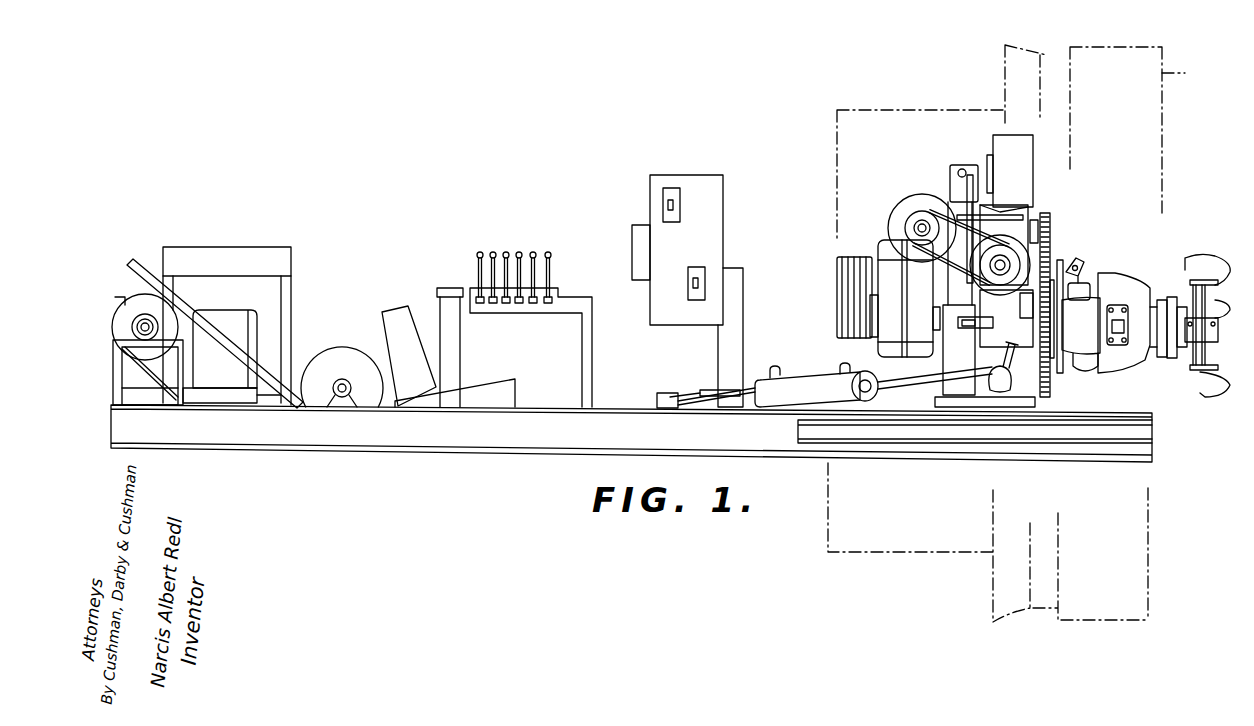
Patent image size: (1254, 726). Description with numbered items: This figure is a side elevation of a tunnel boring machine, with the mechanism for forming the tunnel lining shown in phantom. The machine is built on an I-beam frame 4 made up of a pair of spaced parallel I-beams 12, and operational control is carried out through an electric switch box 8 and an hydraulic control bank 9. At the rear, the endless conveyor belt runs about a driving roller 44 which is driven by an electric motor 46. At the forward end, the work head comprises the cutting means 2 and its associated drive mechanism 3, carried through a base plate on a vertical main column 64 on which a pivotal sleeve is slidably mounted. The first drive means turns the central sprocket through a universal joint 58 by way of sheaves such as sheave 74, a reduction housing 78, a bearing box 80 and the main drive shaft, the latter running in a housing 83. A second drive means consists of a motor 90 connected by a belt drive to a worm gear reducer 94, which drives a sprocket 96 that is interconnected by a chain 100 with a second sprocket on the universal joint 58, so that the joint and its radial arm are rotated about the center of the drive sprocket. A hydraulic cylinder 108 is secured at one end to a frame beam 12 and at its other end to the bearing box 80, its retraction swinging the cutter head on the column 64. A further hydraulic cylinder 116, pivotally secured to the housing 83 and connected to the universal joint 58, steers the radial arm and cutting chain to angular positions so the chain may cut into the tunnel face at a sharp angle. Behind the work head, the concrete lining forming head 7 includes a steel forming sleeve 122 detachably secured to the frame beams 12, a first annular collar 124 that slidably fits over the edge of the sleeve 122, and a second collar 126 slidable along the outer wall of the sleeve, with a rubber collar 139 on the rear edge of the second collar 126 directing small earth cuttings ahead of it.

The cutting means 2 is at (1213, 433).
The drive mechanism 3 is at (909, 159).
The I-beam frame 4 is at (448, 446).
The concrete lining forming head 7 is at (980, 518).
The electric switch box 8 is at (688, 175).
The hydraulic control bank 9 is at (577, 296).
The I-beams 12 is at (637, 412).
The driving roller 44 is at (123, 301).
The electric motor 46 is at (266, 311).
The universal joint 58 is at (1125, 369).
The vertical main column 64 is at (1017, 143).
The sheave 74 is at (837, 282).
The reduction housing 78 is at (890, 344).
The bearing box 80 is at (1059, 380).
The housing 83 is at (1066, 258).
The motor 90 is at (907, 204).
The worm gear reducer 94 is at (1000, 210).
The sprocket 96 is at (1050, 217).
The chain 100 is at (1051, 250).
The hydraulic cylinder 108 is at (804, 380).
The hydraulic cylinder 116 is at (1086, 373).
The steel forming sleeve 122 is at (863, 96).
The first annular collar 124 is at (1190, 78).
The second collar 126 is at (1053, 55).
The rubber collar 139 is at (1004, 52).